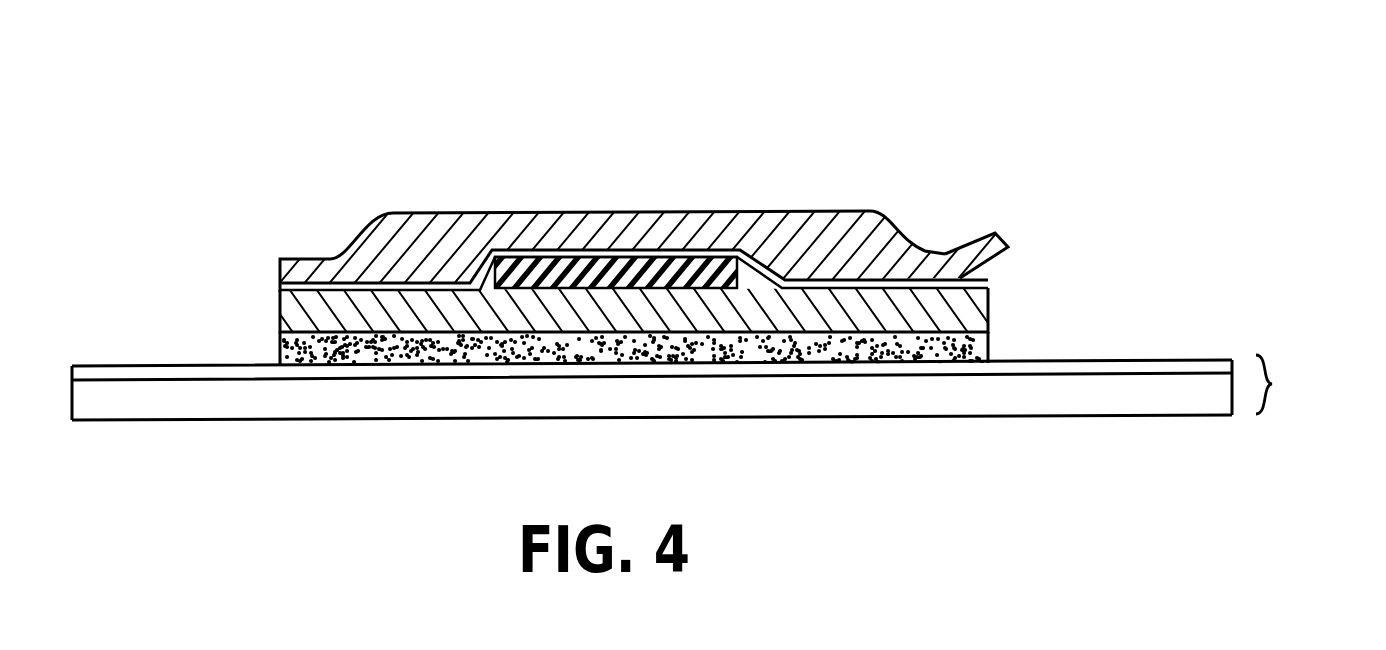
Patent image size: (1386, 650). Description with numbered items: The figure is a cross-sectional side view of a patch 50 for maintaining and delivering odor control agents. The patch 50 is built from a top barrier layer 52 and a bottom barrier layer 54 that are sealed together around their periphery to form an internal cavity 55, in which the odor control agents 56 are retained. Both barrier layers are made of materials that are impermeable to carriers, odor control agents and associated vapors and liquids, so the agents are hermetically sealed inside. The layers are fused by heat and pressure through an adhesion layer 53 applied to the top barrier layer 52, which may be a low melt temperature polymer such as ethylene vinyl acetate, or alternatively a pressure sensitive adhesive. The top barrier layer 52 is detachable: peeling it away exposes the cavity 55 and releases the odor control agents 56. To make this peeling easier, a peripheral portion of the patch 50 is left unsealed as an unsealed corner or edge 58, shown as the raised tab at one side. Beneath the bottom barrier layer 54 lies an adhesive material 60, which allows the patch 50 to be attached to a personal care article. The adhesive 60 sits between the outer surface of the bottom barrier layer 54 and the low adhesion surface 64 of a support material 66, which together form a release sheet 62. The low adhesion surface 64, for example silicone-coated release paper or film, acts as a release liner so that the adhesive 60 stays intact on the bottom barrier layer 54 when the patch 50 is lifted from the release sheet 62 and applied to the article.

The patch 50 is at (800, 96).
The top barrier layer 52 is at (427, 236).
The adhesion layer 53 is at (280, 287).
The bottom barrier layer 54 is at (280, 310).
The internal cavity 55 is at (477, 277).
The odor control agents 56 is at (623, 267).
The unsealed corner or edge 58 is at (975, 240).
The adhesive material 60 is at (275, 347).
The release sheet 62 is at (1278, 380).
The low adhesion surface 64 is at (1075, 360).
The support material 66 is at (1137, 398).